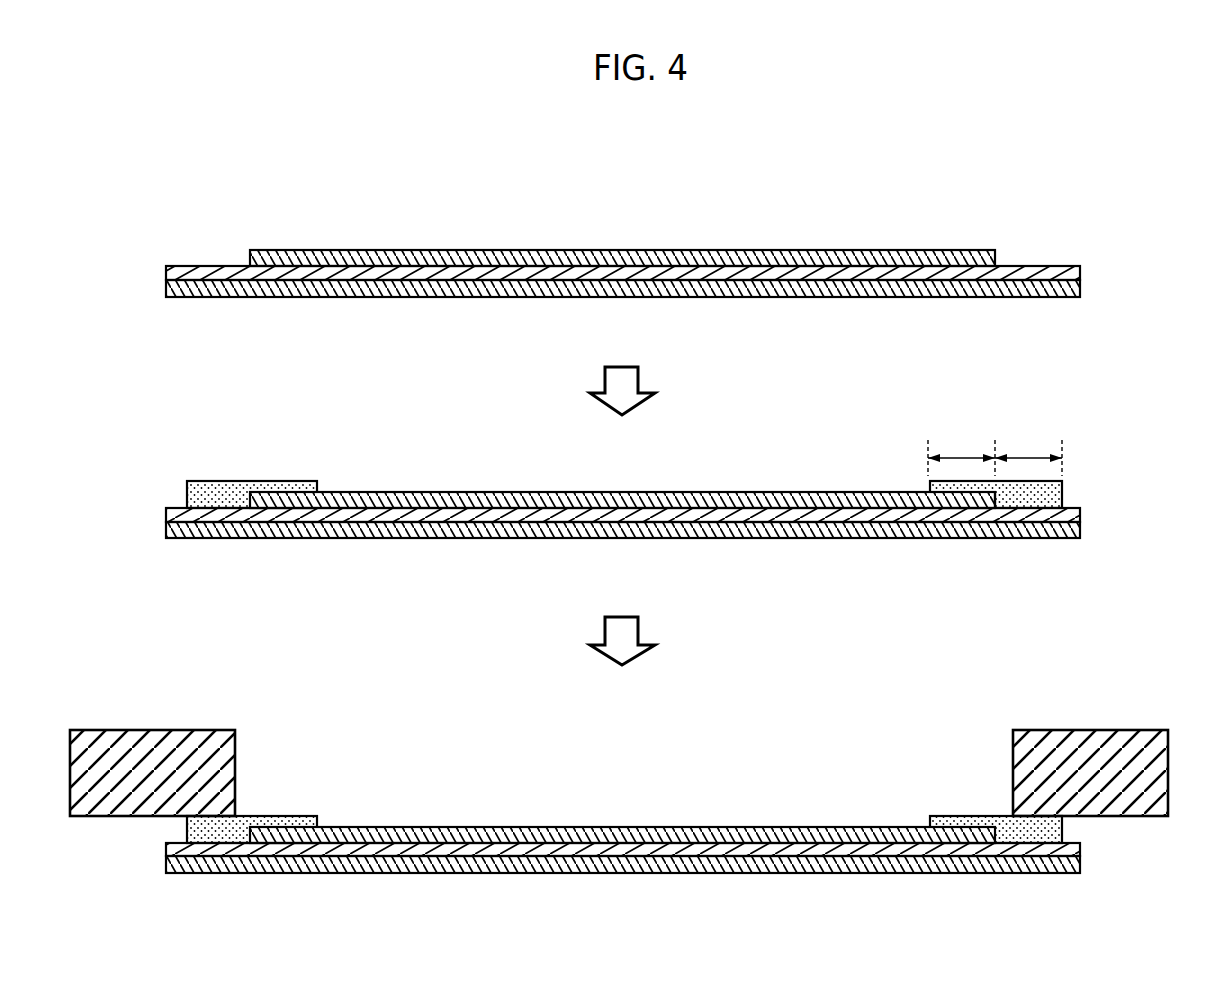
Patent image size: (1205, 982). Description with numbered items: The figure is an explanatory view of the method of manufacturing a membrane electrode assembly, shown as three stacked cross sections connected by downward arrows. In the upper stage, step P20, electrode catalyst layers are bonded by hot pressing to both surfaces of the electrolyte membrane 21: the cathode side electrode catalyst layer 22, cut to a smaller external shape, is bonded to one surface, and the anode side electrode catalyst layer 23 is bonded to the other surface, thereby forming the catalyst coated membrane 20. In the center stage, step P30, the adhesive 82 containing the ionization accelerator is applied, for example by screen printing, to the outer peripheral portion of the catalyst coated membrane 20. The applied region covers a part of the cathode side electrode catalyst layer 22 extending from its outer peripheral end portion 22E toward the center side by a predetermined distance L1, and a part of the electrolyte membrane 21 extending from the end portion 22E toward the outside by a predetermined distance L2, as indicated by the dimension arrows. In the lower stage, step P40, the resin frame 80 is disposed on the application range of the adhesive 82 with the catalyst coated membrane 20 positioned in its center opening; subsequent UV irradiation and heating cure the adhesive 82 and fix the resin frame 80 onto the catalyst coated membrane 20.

The catalyst coated membrane 20 is at (1044, 198).
The electrolyte membrane 21 is at (1080, 269).
The cathode side electrode catalyst layer 22 is at (790, 250).
The end portion 22E is at (1002, 509).
The anode side electrode catalyst layer 23 is at (1080, 288).
The resin frame 80 is at (203, 737).
The adhesive 82 is at (186, 492).
The step P20 is at (184, 184).
The step P30 is at (182, 428).
The step P40 is at (182, 679).
The predetermined distance L1 is at (961, 441).
The predetermined distance L2 is at (1028, 441).